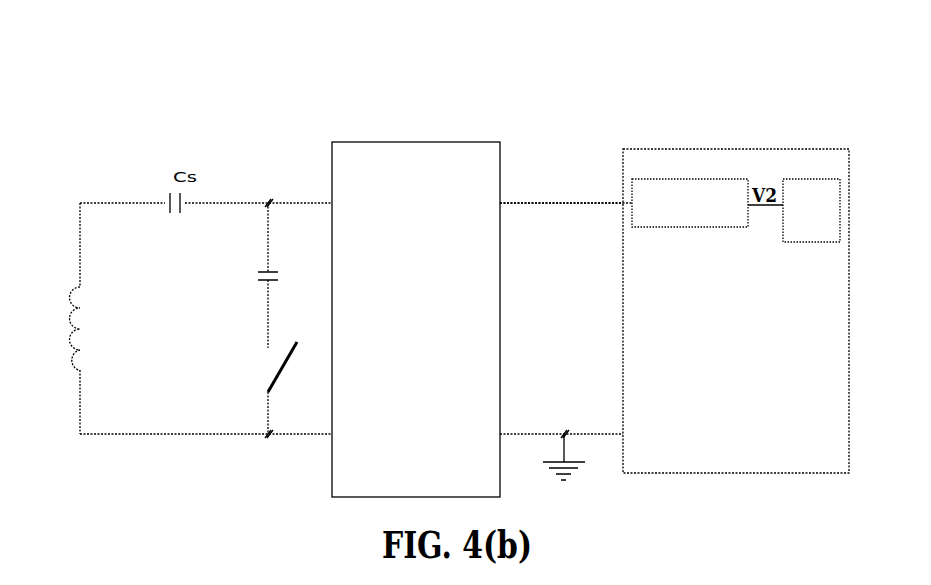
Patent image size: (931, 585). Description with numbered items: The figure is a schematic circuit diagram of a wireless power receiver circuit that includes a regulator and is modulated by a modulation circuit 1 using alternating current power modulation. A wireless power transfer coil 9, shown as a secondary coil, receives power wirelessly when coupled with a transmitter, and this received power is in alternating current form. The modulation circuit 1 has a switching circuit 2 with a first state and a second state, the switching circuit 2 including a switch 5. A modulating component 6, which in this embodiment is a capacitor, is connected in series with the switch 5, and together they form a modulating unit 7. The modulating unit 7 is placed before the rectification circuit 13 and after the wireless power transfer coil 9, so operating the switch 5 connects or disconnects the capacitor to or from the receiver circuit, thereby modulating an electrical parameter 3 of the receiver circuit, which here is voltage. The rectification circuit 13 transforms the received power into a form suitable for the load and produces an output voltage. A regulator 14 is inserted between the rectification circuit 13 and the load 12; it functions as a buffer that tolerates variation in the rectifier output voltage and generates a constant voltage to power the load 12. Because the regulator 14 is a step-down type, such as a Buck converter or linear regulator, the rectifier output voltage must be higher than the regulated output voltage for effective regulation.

The modulation circuit 1 is at (188, 292).
The switching circuit 2 is at (238, 393).
The electrical parameter 3 is at (560, 178).
The switch 5 is at (283, 364).
The modulating component 6 is at (277, 272).
The modulating unit 7 is at (185, 339).
The wireless power transfer coil 9 is at (70, 315).
The load 12 is at (807, 179).
The rectification circuit 13 is at (420, 142).
The regulator 14 is at (685, 179).